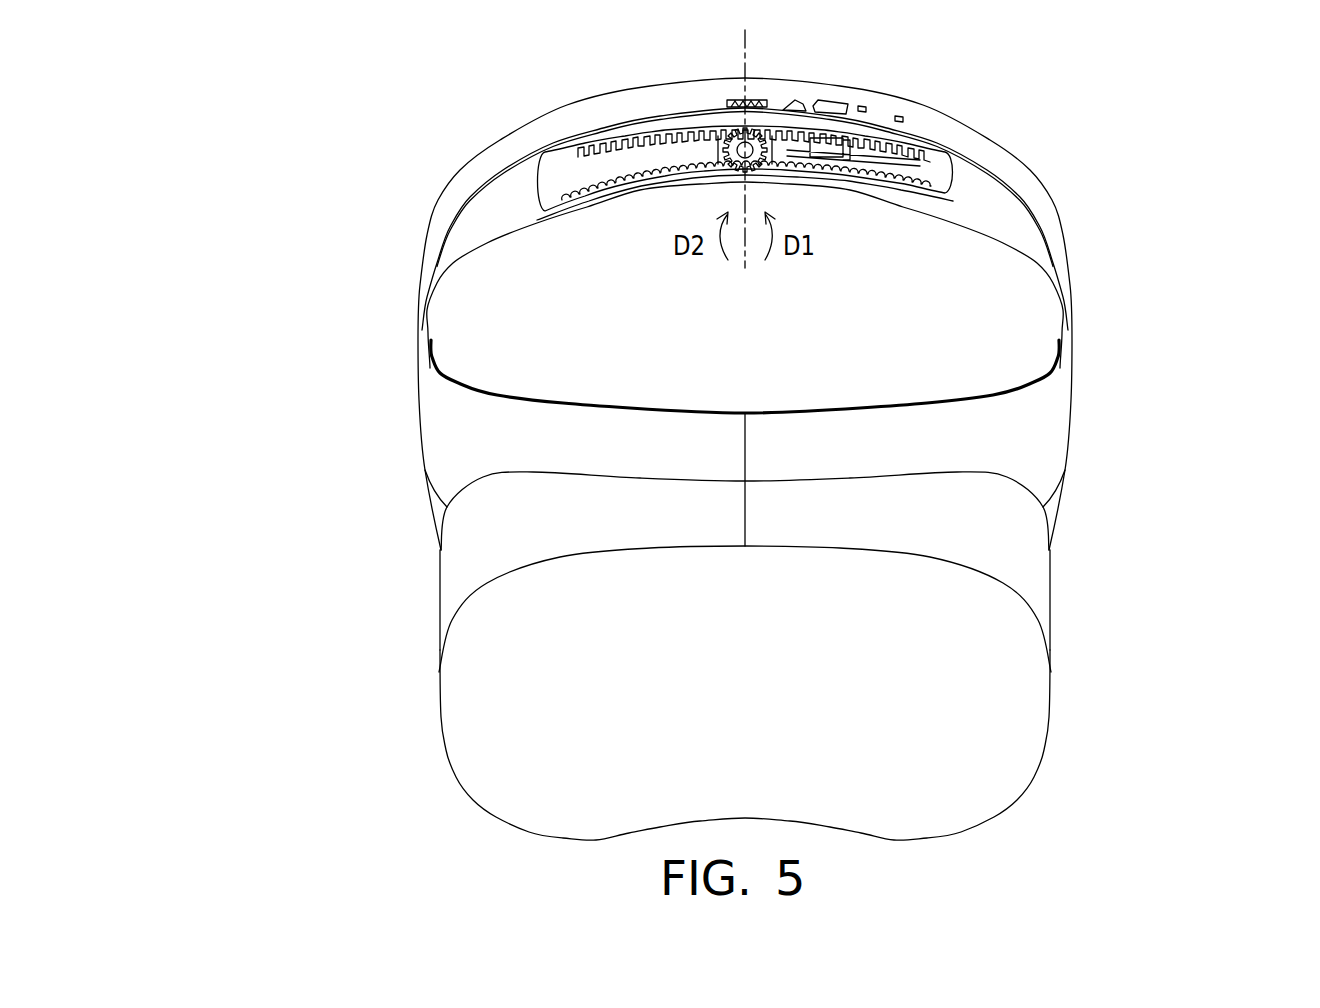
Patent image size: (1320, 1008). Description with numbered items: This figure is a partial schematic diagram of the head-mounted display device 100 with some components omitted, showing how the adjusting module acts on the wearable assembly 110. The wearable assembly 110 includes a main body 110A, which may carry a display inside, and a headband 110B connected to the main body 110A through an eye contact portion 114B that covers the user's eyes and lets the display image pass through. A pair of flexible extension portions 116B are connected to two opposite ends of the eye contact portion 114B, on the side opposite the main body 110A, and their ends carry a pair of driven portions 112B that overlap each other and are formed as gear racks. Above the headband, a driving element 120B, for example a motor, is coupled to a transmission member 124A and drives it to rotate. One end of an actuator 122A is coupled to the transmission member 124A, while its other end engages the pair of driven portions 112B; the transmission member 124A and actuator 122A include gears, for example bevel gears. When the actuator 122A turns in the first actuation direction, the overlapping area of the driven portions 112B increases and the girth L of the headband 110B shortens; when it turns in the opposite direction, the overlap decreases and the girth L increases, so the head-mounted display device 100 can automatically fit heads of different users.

The head-mounted display device 100 is at (1223, 173).
The wearable assembly 110 is at (745, 275).
The main body 110A is at (462, 702).
The headband 110B is at (397, 313).
The driven portions 112B is at (550, 175).
The eye contact portion 114B is at (917, 440).
The flexible extension portions 116B is at (420, 340).
The driving element 120B is at (840, 110).
The actuator 122A is at (727, 147).
The transmission member 124A is at (797, 105).
The girth L is at (1040, 175).